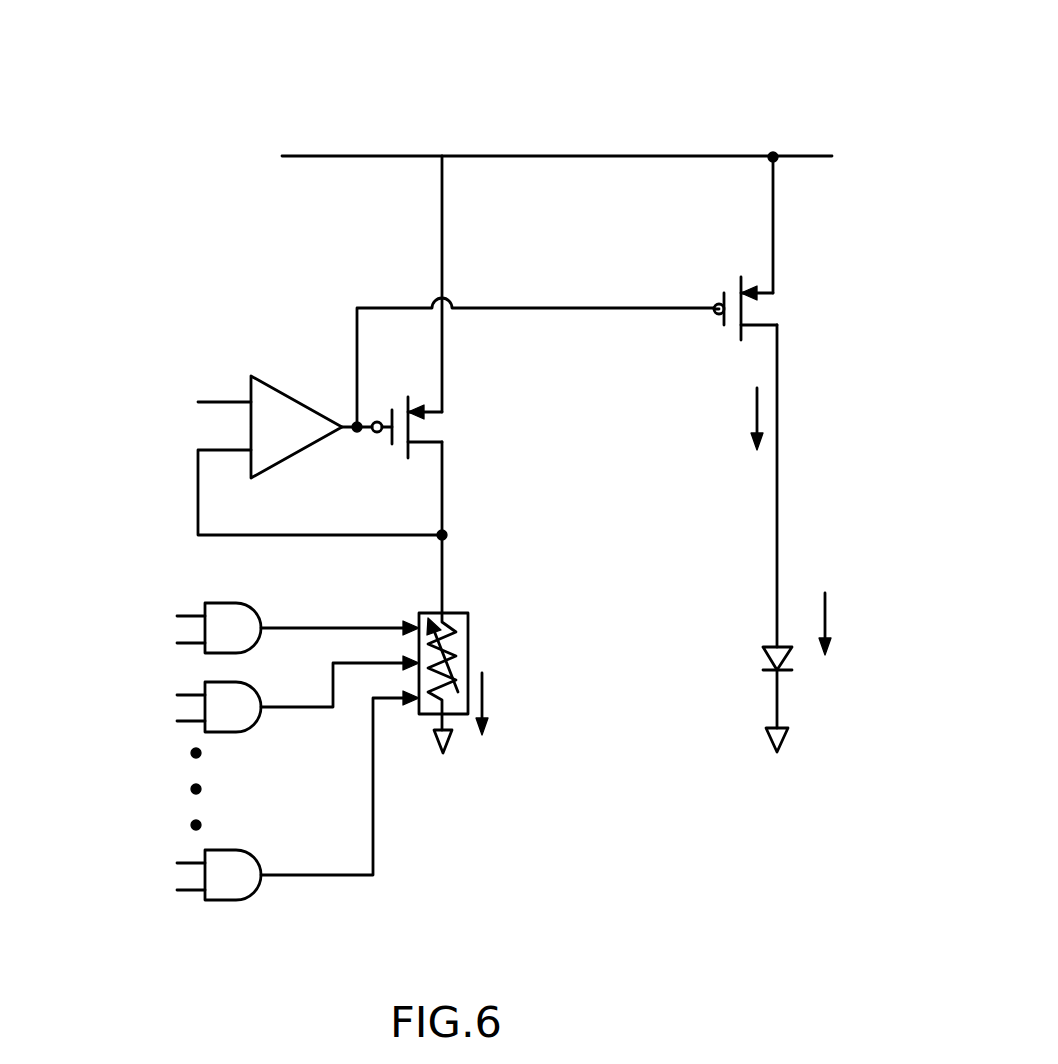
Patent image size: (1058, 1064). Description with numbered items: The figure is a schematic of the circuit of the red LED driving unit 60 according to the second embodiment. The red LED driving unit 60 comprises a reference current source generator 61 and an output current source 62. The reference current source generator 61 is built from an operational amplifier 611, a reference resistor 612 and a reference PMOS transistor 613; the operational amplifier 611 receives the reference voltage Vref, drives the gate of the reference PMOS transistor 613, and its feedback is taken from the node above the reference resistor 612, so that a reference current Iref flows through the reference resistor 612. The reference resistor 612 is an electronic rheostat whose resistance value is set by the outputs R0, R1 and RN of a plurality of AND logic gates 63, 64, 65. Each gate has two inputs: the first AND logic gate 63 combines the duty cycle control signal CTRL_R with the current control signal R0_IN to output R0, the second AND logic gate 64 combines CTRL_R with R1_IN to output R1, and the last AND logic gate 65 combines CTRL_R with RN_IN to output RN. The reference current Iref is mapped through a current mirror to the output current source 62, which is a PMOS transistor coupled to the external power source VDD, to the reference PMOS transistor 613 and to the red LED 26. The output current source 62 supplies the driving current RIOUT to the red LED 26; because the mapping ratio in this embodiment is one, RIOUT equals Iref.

The red LED driving unit 60 is at (776, 113).
The reference current source generator 61 is at (308, 280).
The operational amplifier 611 is at (273, 390).
The reference resistor 612 is at (468, 635).
The reference PMOS transistor 613 is at (407, 450).
The output current source 62 is at (740, 285).
The first AND logic gate 63 is at (218, 603).
The second AND logic gate 64 is at (240, 733).
The (N+1)th AND logic gate 65 is at (230, 903).
The red LED 26 is at (762, 660).